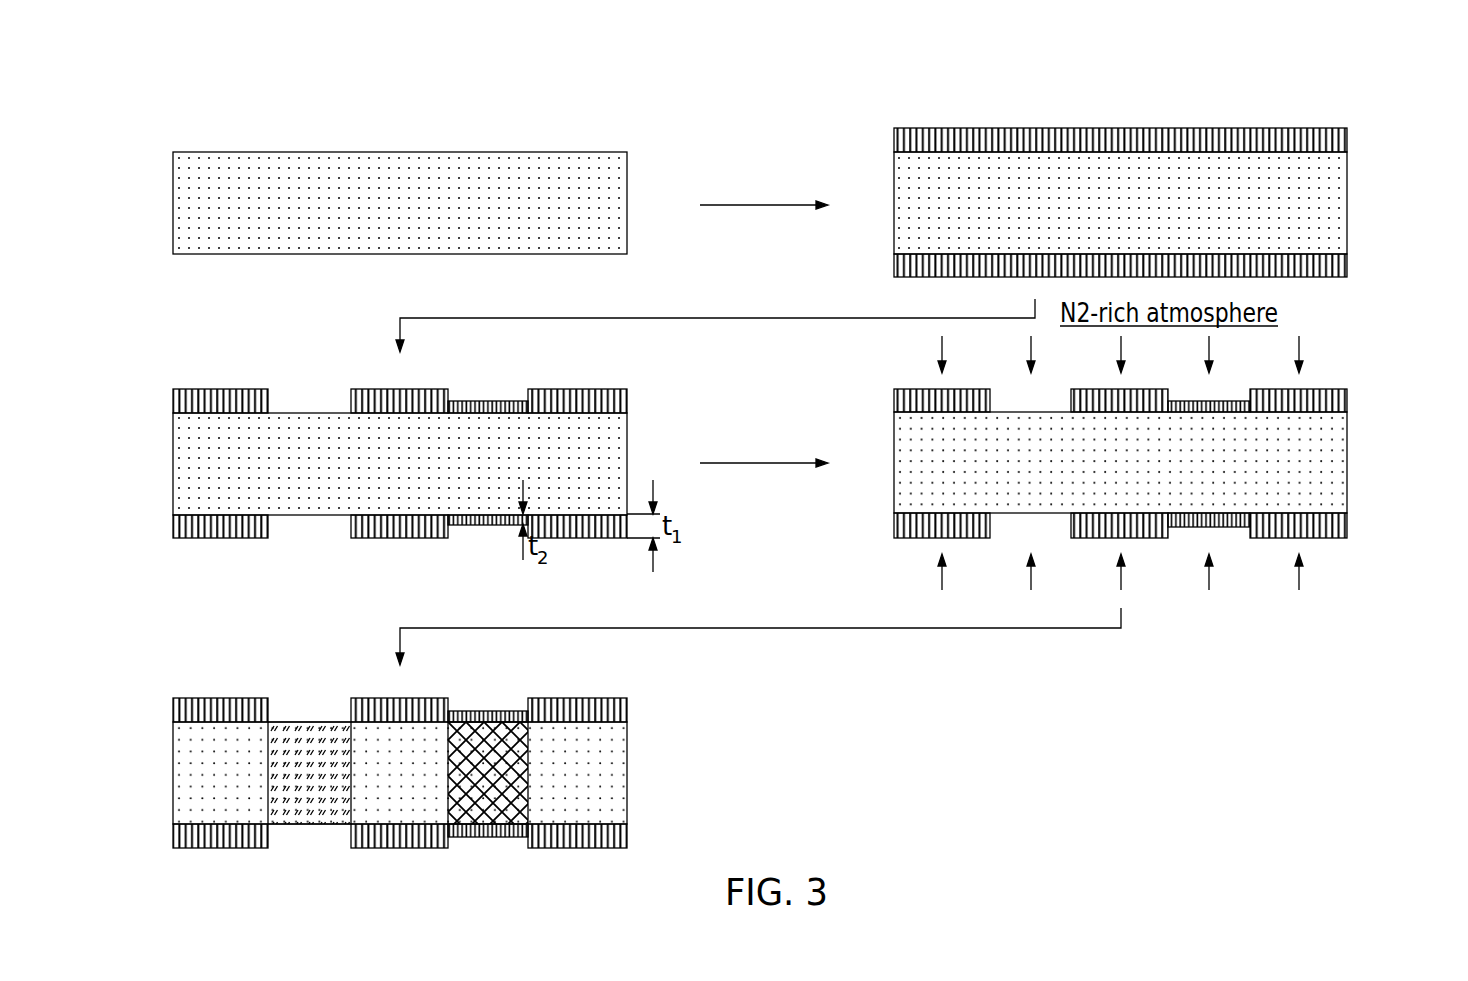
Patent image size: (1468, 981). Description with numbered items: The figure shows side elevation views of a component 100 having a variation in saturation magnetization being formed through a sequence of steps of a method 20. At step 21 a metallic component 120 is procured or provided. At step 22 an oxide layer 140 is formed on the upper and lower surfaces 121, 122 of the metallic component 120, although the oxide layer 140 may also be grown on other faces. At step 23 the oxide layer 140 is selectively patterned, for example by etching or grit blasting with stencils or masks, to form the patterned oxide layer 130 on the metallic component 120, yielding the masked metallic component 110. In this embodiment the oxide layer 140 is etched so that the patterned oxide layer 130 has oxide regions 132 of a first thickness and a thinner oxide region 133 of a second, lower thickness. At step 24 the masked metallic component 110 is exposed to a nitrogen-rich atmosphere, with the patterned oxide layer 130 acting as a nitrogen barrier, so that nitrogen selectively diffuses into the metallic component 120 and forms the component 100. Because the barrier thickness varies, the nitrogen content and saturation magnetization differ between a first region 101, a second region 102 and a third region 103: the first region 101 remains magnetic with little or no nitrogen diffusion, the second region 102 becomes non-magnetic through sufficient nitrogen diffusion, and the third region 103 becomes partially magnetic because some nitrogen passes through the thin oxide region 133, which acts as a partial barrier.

The method 20 is at (1348, 55).
The step of providing metallic component 21 is at (140, 145).
The step of forming oxide layer 22 is at (858, 120).
The step of selectively patterning oxide layer 23 is at (140, 382).
The nitrogenation step 24 is at (858, 381).
The component 100 is at (157, 821).
The first region 101 is at (250, 789).
The second region 102 is at (330, 712).
The third region 103 is at (517, 763).
The masked metallic component 110 is at (157, 512).
The metallic component 120 is at (617, 180).
The surface of metallic component 121 is at (537, 153).
The surface of metallic component 122 is at (535, 254).
The patterned oxide layer 130 is at (766, 638).
The oxide regions 132 is at (348, 525).
The oxide region 133 is at (495, 523).
The oxide layer 140 is at (1338, 140).